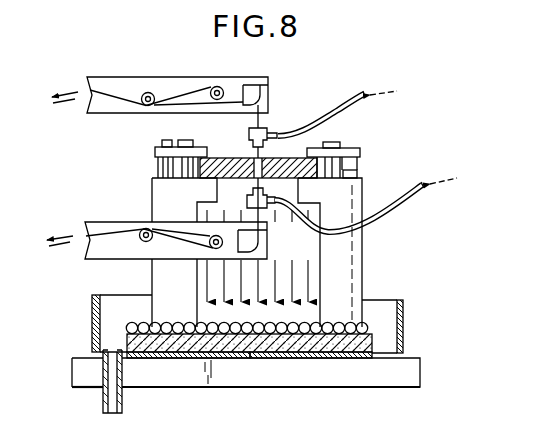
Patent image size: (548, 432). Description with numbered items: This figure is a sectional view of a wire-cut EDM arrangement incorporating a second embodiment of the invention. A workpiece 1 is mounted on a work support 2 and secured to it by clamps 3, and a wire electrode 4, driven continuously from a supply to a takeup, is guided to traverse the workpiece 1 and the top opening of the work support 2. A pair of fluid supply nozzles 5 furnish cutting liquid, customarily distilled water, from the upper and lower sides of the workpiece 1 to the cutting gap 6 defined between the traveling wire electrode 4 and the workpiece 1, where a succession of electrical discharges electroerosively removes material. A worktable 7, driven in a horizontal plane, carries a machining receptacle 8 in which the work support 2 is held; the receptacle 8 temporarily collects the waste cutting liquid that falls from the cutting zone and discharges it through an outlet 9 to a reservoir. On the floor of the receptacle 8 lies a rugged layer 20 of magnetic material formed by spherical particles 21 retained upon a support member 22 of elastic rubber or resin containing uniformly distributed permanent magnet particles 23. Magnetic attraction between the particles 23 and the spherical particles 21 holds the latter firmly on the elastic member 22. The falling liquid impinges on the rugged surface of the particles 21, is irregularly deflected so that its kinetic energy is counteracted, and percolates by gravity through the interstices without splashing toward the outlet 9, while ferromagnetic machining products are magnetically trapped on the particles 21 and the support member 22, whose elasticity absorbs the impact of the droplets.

The workpiece 1 is at (336, 142).
The work support 2 is at (157, 197).
The clamps 3 is at (156, 152).
The wire electrode 4 is at (189, 97).
The fluid supply nozzles 5 is at (270, 126).
The cutting gap 6 is at (257, 168).
The worktable 7 is at (420, 373).
The machining receptacle 8 is at (403, 323).
The outlet 9 is at (104, 395).
The rugged layer of magnetic material 20 is at (134, 326).
The spherical particles 21 is at (169, 340).
The support member 22 is at (226, 355).
The permanent magnet particles 23 is at (357, 356).